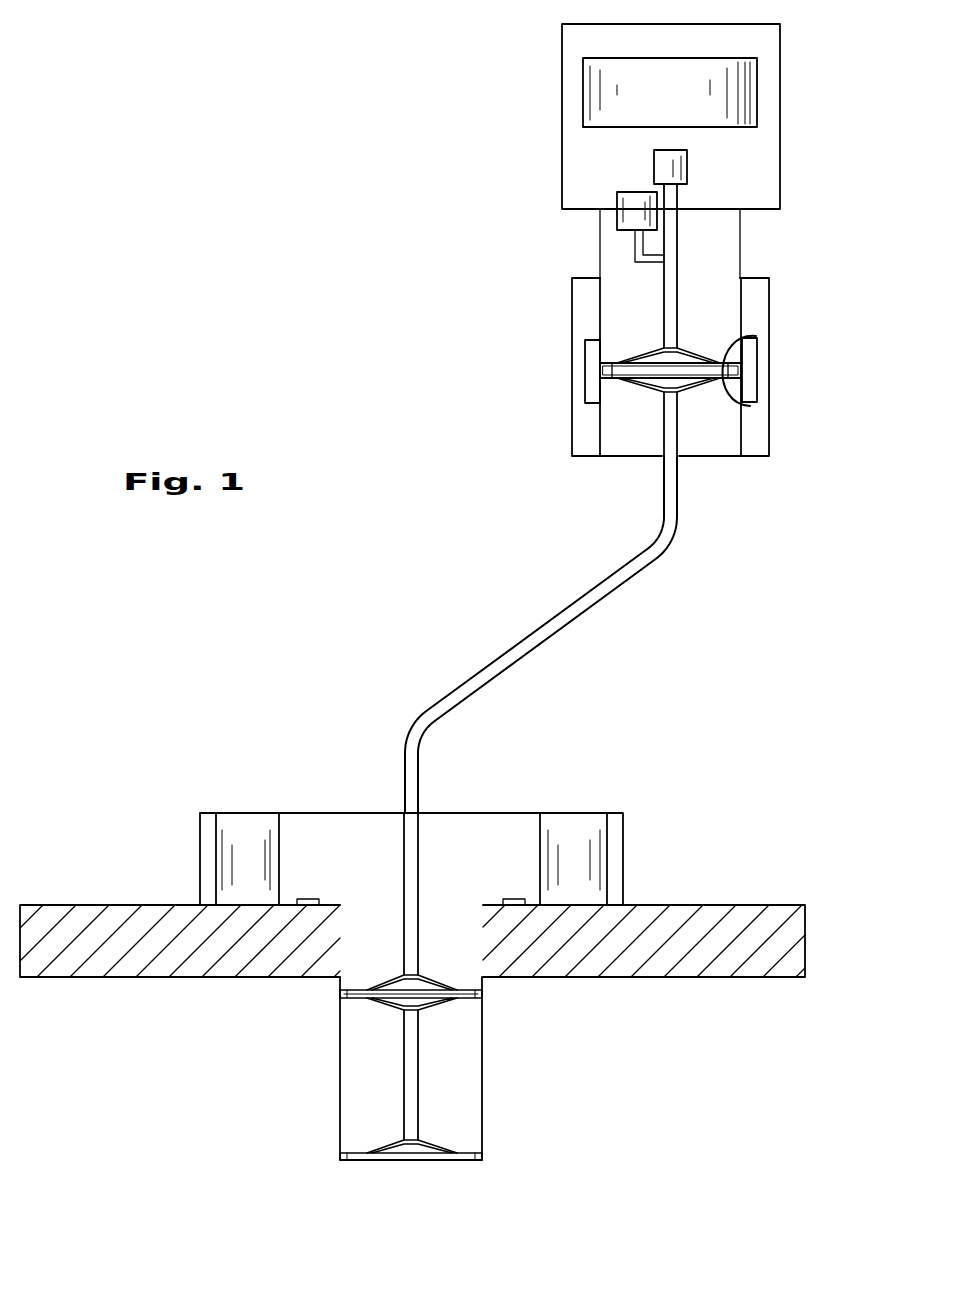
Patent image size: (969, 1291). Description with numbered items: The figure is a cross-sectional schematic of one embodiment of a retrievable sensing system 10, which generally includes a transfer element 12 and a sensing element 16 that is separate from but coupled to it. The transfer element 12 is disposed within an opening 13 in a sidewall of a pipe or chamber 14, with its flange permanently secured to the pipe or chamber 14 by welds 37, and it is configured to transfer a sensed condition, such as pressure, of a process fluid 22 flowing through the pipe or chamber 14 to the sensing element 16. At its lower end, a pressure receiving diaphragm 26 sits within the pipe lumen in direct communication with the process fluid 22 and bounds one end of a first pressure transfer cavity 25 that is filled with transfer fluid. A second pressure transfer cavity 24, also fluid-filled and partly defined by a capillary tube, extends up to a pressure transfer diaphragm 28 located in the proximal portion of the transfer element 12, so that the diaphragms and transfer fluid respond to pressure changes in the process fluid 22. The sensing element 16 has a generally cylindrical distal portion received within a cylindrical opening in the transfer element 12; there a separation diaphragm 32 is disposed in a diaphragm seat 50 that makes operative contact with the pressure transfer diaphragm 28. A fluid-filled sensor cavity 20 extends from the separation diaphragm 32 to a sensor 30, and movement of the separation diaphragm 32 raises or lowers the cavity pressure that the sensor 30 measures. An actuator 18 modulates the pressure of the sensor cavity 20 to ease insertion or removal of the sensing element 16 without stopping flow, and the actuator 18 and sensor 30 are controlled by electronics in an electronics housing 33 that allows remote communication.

The retrievable sensing system 10 is at (425, 440).
The transfer element 12 is at (770, 668).
The opening 13 is at (310, 1008).
The pipe or chamber 14 is at (775, 910).
The sensing element 16 is at (812, 145).
The actuator 18 is at (600, 226).
The sensor cavity 20 is at (677, 268).
The process fluid 22 is at (633, 1100).
The second pressure transfer cavity 24 is at (518, 660).
The first pressure transfer cavity 25 is at (404, 1090).
The pressure receiving diaphragm 26 is at (465, 1162).
The pressure transfer diaphragm 28 is at (750, 406).
The sensor 30 is at (654, 168).
The separation diaphragm 32 is at (752, 337).
The electronics housing 33 is at (757, 92).
The welds 37 is at (262, 825).
The diaphragm seat 50 is at (645, 348).